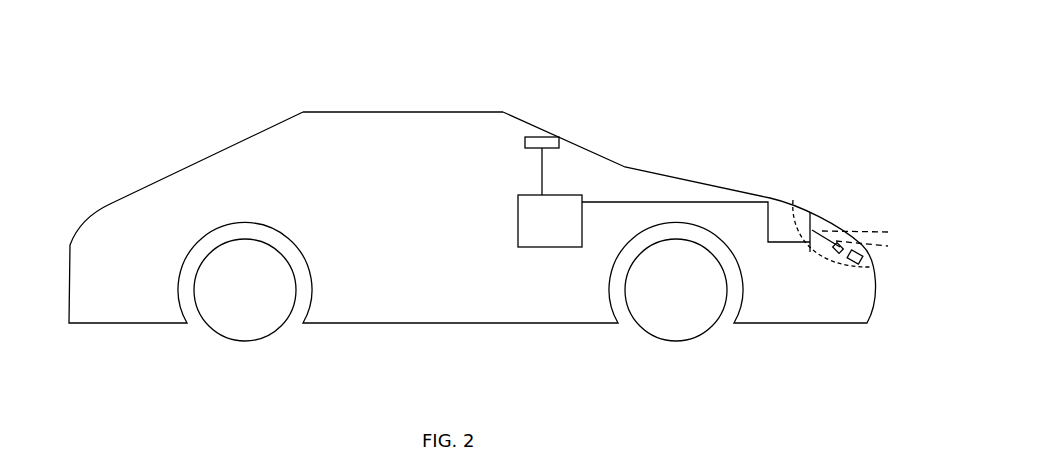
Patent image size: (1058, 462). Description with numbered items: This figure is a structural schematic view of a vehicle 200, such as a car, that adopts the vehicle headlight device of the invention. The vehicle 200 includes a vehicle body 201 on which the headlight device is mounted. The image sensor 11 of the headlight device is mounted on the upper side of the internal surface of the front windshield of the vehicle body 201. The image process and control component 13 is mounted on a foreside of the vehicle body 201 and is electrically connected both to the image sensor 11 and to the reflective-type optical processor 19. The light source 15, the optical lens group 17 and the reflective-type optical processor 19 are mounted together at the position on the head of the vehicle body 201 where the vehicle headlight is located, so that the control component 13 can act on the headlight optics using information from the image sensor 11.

The vehicle 200 is at (462, 49).
The vehicle body 201 is at (318, 128).
The image sensor 11 is at (537, 140).
The image process and control component 13 is at (538, 241).
The reflective-type optical processor 19 is at (810, 213).
The optical lens group 17 is at (837, 253).
The light source 15 is at (863, 258).